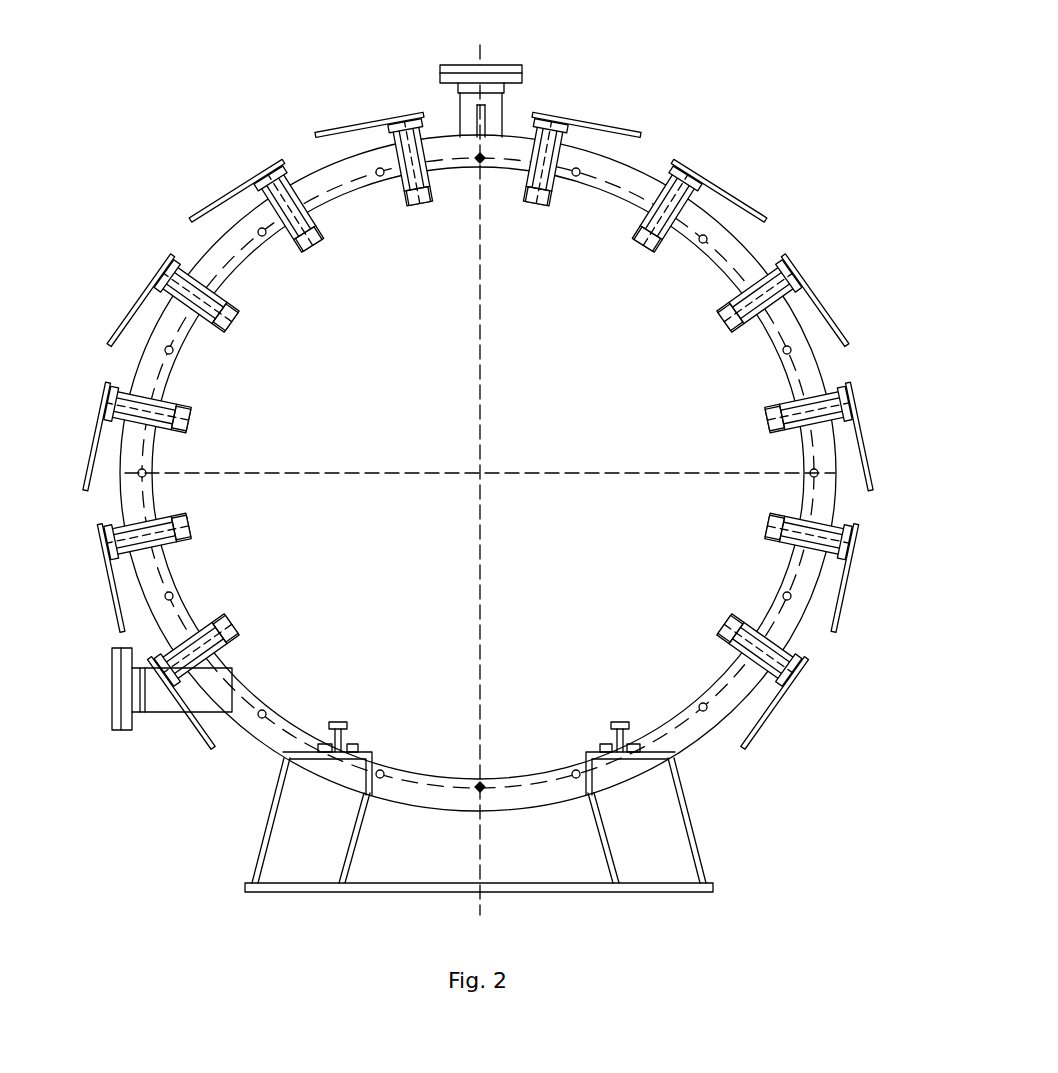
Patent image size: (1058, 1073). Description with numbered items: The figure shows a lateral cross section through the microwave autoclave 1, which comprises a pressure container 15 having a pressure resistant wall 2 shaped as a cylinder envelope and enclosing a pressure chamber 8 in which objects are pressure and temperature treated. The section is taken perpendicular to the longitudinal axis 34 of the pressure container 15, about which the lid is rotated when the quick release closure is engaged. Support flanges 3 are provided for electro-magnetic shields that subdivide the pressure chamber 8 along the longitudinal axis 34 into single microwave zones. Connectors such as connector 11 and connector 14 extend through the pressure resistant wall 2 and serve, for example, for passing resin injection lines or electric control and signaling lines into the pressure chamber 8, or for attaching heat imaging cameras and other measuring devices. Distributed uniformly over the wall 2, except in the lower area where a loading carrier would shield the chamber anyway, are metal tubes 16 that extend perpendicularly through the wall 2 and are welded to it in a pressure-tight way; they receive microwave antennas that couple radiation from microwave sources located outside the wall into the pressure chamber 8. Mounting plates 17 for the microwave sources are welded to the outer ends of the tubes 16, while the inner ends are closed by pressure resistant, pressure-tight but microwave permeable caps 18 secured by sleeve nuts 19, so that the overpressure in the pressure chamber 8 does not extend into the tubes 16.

The microwave autoclave 1 is at (180, 778).
The pressure resistant wall 2 is at (488, 411).
The support flanges 3 is at (575, 808).
The pressure chamber 8 is at (378, 268).
The connector 11 is at (491, 64).
The connector 14 is at (112, 694).
The pressure container 15 is at (500, 430).
The tubes 16 is at (883, 668).
The mounting plates 17 is at (842, 578).
The caps 18 is at (620, 135).
The sleeve nuts 19 is at (664, 151).
The longitudinal axis 34 is at (479, 514).